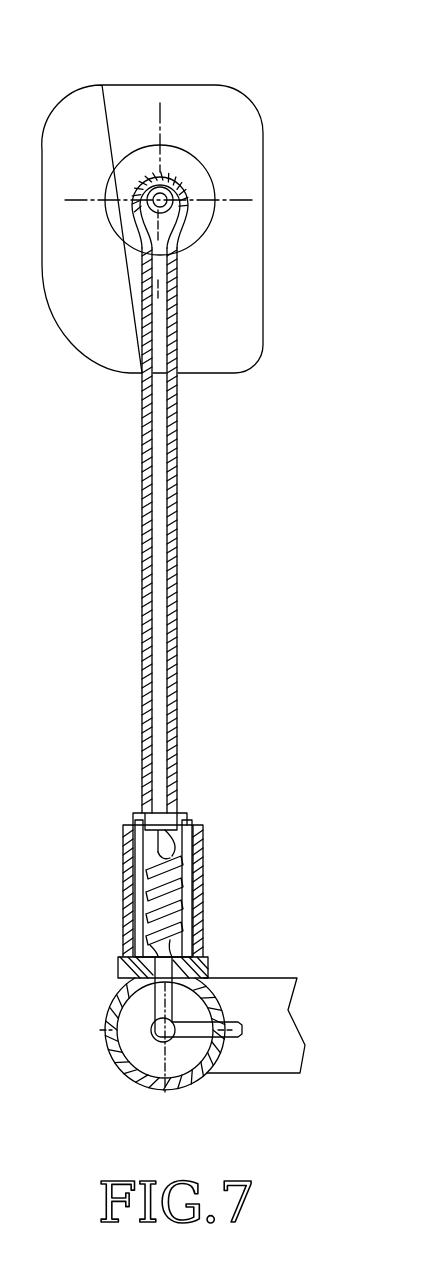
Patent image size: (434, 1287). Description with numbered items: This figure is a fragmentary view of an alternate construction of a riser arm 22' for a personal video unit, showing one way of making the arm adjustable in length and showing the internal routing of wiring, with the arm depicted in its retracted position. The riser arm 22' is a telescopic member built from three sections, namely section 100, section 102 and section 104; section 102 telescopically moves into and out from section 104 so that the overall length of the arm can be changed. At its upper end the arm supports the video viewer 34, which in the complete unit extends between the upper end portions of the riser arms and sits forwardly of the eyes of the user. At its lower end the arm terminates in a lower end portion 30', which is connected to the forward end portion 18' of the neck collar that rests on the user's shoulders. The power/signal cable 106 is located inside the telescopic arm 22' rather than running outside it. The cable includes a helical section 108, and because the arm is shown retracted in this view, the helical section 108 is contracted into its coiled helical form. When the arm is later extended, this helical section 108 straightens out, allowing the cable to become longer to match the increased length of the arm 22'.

The video viewer 34 is at (240, 260).
The section 100 is at (175, 513).
The power/signal cable 106 is at (160, 593).
The riser arm 22' is at (206, 512).
The section 102 is at (188, 825).
The helical section 108 is at (165, 880).
The section 104 is at (205, 887).
The lower end portion 30' is at (156, 1048).
The forward end portion 18' is at (274, 1051).